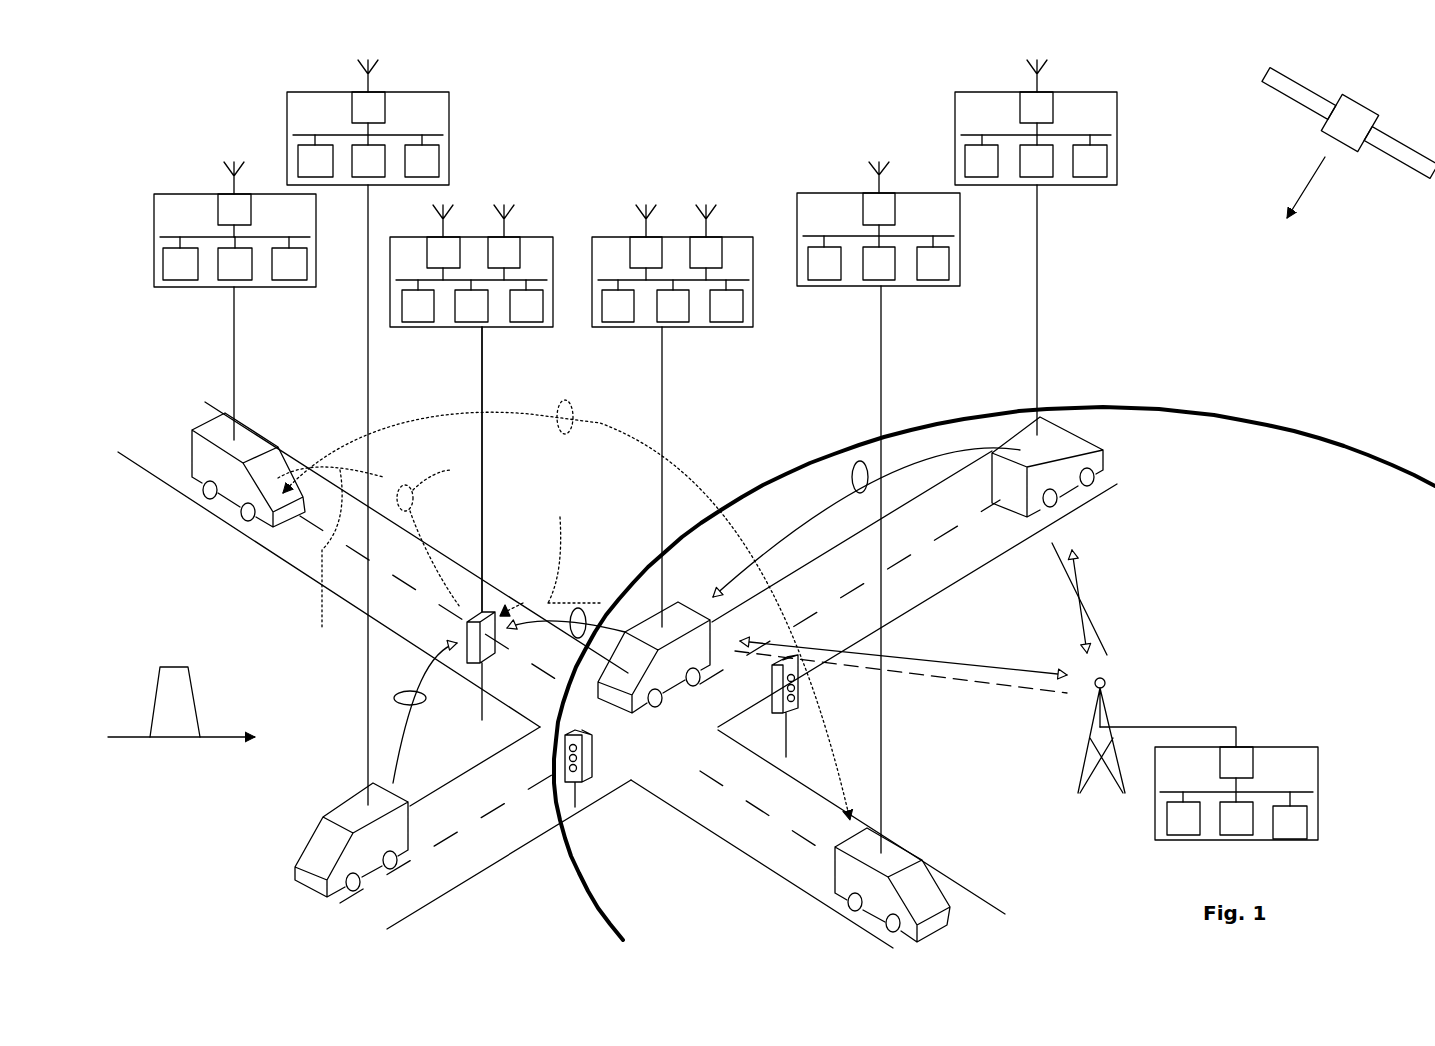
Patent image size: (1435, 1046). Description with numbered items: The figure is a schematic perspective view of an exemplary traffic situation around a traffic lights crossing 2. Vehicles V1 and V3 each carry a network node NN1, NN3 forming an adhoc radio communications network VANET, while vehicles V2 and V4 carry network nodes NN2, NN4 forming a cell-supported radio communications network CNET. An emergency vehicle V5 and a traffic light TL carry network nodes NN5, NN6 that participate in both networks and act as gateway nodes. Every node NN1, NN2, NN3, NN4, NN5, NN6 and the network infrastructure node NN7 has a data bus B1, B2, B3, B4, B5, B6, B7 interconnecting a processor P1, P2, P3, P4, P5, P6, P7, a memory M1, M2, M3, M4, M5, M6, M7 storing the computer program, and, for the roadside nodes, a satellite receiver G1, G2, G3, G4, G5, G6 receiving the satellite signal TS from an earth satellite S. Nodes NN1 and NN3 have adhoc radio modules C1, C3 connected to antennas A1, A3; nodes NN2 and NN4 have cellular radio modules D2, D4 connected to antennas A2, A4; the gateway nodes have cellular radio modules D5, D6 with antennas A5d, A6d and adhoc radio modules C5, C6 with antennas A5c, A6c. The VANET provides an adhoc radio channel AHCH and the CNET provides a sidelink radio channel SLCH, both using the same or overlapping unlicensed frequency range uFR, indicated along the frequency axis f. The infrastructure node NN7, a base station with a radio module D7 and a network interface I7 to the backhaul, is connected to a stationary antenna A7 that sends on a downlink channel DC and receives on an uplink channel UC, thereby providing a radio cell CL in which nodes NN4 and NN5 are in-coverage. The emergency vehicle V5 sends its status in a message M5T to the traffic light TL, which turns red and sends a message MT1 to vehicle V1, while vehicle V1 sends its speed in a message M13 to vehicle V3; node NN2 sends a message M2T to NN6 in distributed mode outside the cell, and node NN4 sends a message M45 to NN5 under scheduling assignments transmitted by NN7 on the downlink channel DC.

The traffic lights crossing 2 is at (195, 589).
The radio cell CL is at (1233, 413).
The cell-supported radio communications network CNET is at (216, 117).
The adhoc radio communications network VANET is at (1065, 210).
The network node NN1 is at (166, 194).
The network node NN2 is at (299, 92).
The network node NN3 is at (809, 193).
The network node NN4 is at (964, 91).
The network node NN5 is at (678, 235).
The network node NN6 is at (472, 237).
The network infrastructure node NN7 is at (1279, 746).
The antenna A1 is at (232, 187).
The antenna A2 is at (372, 85).
The antenna A3 is at (877, 186).
The antenna A4 is at (1042, 85).
The antenna A5c is at (642, 232).
The antenna A5d is at (710, 232).
The antenna A6c is at (440, 232).
The antenna A6d is at (507, 232).
The stationary antenna A7 is at (1110, 682).
The data bus B1 is at (272, 237).
The data bus B2 is at (400, 135).
The data bus B3 is at (911, 237).
The data bus B4 is at (1073, 135).
The data bus B5 is at (721, 280).
The data bus B6 is at (520, 282).
The data bus B7 is at (1273, 793).
The radio module C1 is at (223, 219).
The radio module C3 is at (868, 218).
The radio module C5 is at (635, 262).
The radio module C6 is at (432, 262).
The radio module D2 is at (357, 117).
The radio module D4 is at (1025, 117).
The radio module D5 is at (695, 262).
The radio module D6 is at (493, 262).
The radio module D7 is at (1225, 772).
The memory M1 is at (168, 273).
The memory M2 is at (303, 170).
The memory M3 is at (812, 272).
The memory M4 is at (969, 170).
The memory M5 is at (606, 315).
The memory M6 is at (406, 315).
The memory M7 is at (1171, 827).
The processor P1 is at (223, 273).
The processor P2 is at (357, 170).
The processor P3 is at (868, 272).
The processor P4 is at (1025, 170).
The processor P5 is at (662, 315).
The processor P6 is at (460, 315).
The processor P7 is at (1225, 827).
The satellite receiver G1 is at (277, 273).
The satellite receiver G2 is at (410, 170).
The satellite receiver G3 is at (922, 272).
The satellite receiver G4 is at (1078, 170).
The satellite receiver G5 is at (715, 315).
The satellite receiver G6 is at (515, 315).
The network interface I7 is at (1281, 832).
The earth satellite S is at (1345, 122).
The satellite signal TS is at (1310, 197).
The unlicensed frequency range uFR is at (158, 693).
The frequency axis f is at (259, 713).
The vehicle V1 is at (190, 440).
The vehicle V2 is at (310, 848).
The vehicle V3 is at (835, 885).
The vehicle V4 is at (1103, 460).
The vehicle V5 is at (693, 603).
The traffic light TL is at (470, 610).
The message M45 is at (937, 443).
The message M5T is at (537, 603).
The message M2T is at (418, 682).
The message M13 is at (537, 412).
The message MT1 is at (326, 561).
The sidelink radio channel SLCH is at (856, 458).
The adhoc radio channel AHCH is at (445, 533).
The downlink channel DC is at (1087, 590).
The uplink channel UC is at (1100, 623).